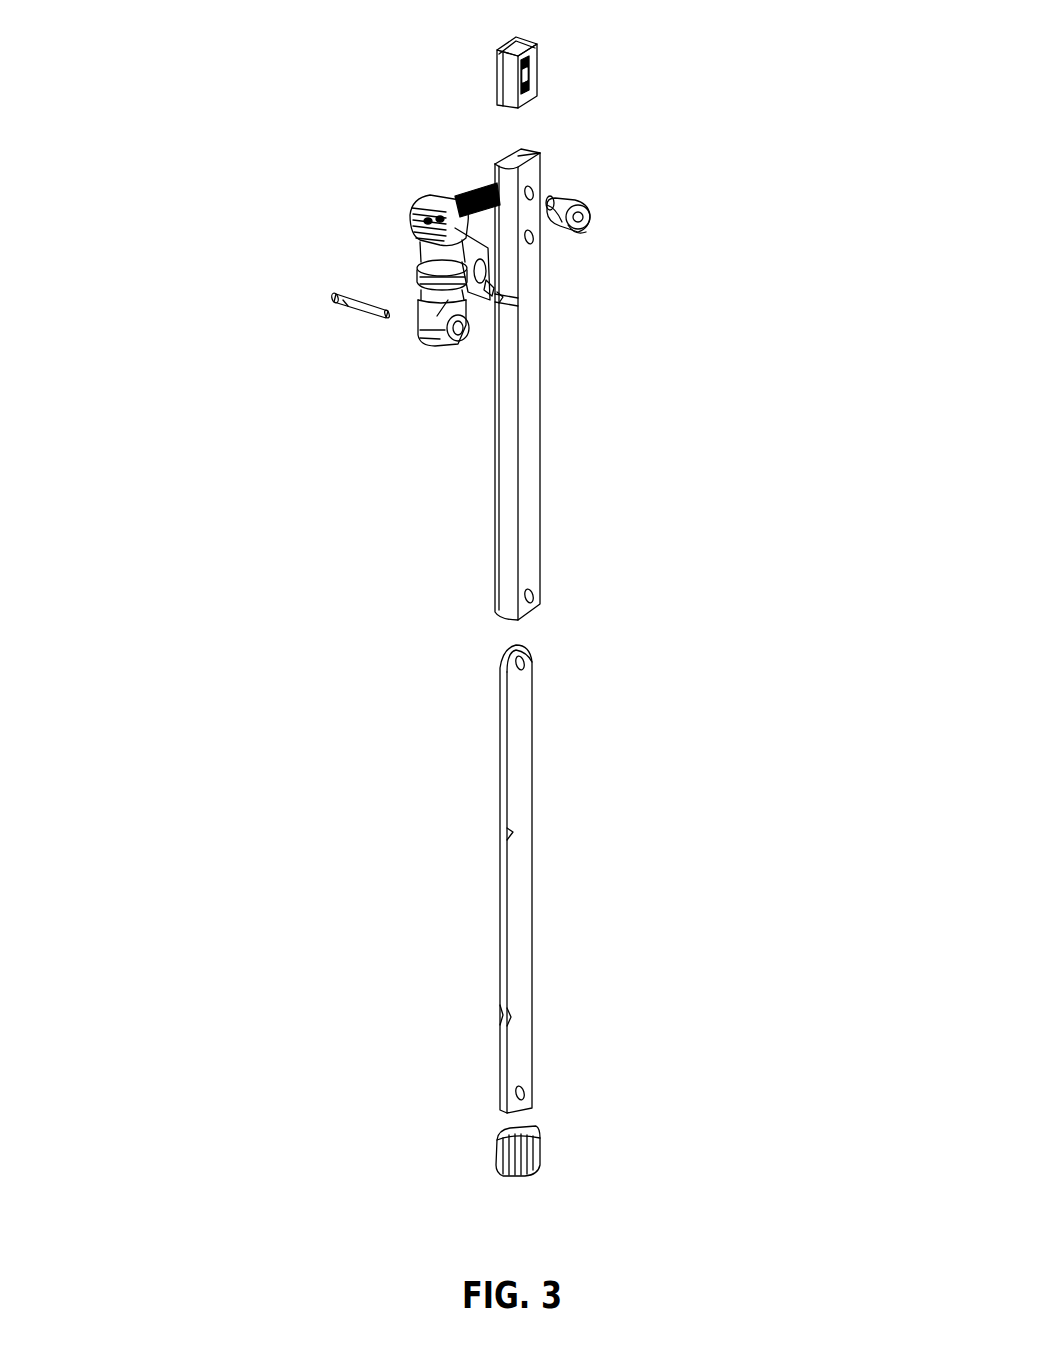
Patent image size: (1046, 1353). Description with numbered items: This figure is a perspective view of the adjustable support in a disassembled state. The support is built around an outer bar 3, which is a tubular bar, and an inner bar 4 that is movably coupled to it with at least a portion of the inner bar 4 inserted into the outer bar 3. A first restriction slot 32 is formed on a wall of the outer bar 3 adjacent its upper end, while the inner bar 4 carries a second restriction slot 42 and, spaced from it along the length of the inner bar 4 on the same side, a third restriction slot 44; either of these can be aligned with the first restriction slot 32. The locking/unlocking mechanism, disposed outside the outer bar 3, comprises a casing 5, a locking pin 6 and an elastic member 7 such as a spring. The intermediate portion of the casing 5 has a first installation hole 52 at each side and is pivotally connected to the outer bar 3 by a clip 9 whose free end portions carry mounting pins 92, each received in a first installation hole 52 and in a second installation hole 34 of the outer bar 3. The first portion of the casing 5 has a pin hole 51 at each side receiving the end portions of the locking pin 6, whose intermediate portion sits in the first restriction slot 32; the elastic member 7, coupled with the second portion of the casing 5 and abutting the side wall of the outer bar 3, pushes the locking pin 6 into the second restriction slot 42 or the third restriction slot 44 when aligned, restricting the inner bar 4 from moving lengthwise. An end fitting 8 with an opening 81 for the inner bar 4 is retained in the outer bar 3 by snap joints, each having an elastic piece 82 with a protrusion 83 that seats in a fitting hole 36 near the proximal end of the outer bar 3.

The outer bar 3 is at (527, 492).
The first restriction slot 32 is at (519, 300).
The second installation hole 34 is at (531, 241).
The fitting hole 36 is at (543, 196).
The inner bar 4 is at (527, 758).
The second restriction slot 42 is at (508, 833).
The third restriction slot 44 is at (503, 1012).
The casing 5 is at (428, 305).
The pin hole 51 is at (458, 345).
The first installation hole 52 is at (490, 285).
The locking pin 6 is at (342, 302).
The elastic member 7 is at (468, 198).
The end fitting 8 is at (538, 40).
The opening 81 is at (497, 42).
The elastic piece 82 is at (540, 62).
The protrusion 83 is at (540, 93).
The clip 9 is at (588, 203).
The mounting pin 92 is at (590, 227).